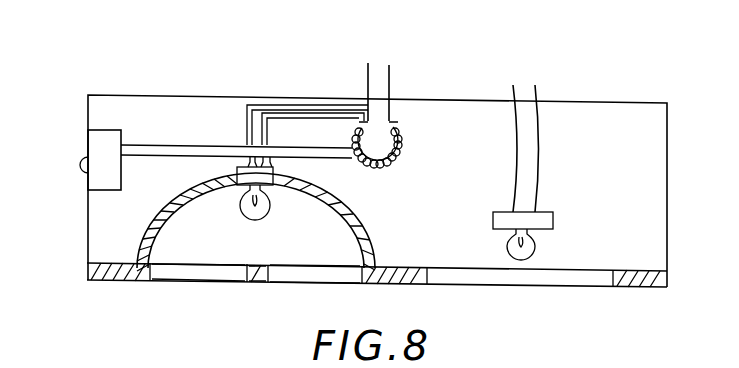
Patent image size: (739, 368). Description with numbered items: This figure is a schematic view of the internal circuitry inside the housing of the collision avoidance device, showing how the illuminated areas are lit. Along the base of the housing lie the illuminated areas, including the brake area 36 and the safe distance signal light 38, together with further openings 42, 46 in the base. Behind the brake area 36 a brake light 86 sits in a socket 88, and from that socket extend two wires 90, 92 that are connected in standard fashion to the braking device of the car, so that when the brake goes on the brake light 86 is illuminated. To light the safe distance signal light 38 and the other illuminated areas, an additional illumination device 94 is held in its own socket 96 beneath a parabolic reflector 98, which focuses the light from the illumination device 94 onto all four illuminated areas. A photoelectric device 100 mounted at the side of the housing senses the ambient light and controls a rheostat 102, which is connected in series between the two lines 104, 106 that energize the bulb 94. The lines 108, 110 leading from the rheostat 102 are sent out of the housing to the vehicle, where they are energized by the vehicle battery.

The brake area 36 is at (505, 278).
The safe distance signal light 38 is at (256, 298).
The floor opening 42 is at (296, 280).
The floor opening 46 is at (203, 278).
The brake light 86 is at (538, 245).
The socket 88 is at (553, 213).
The wire 90 is at (537, 93).
The wire 92 is at (513, 90).
The illumination device 94 is at (270, 215).
The socket 96 is at (267, 175).
The parabolic reflector 98 is at (352, 220).
The photoelectric device 100 is at (97, 177).
The rheostat 102 is at (406, 143).
The line 104 is at (287, 98).
The line 106 is at (328, 98).
The line from the rheostat 108 is at (368, 63).
The line from the rheostat 110 is at (390, 80).